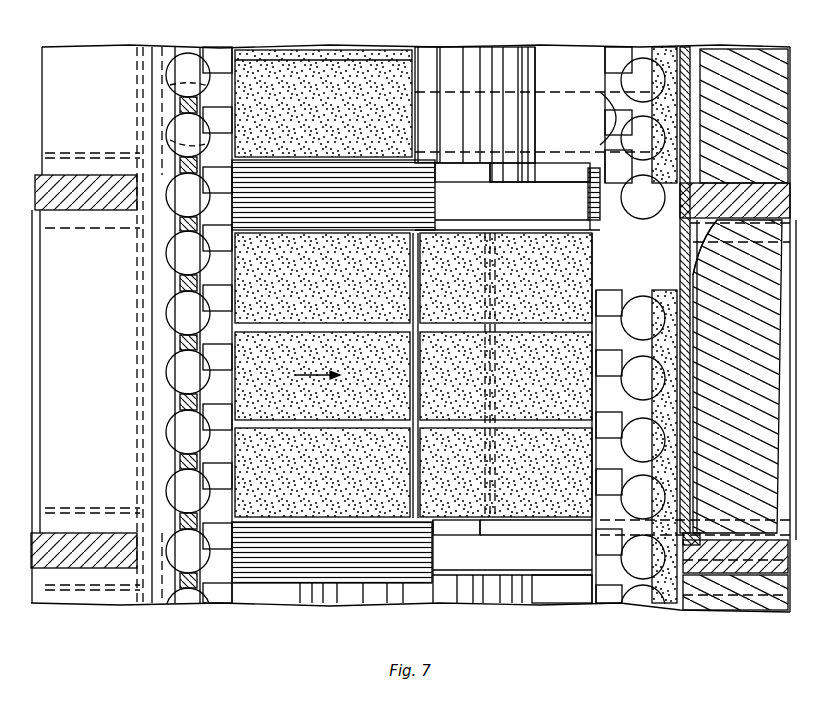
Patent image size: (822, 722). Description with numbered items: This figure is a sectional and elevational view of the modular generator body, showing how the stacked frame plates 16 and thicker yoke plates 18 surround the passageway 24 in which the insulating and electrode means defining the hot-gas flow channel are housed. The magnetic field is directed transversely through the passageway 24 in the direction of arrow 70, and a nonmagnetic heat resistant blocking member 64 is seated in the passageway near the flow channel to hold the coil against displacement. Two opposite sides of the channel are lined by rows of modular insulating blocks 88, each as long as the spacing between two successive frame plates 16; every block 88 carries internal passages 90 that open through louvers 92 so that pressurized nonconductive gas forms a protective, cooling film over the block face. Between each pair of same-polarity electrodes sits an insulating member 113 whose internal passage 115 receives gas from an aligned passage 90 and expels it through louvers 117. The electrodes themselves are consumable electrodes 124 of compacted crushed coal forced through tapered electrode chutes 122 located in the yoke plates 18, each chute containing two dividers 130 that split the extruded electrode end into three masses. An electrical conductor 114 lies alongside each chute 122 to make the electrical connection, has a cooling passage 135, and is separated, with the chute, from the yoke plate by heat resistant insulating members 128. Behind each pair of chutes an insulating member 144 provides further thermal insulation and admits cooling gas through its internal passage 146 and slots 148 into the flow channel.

The frame plate 16 is at (76, 230).
The yoke plate 18 is at (700, 263).
The passageway 24 is at (140, 384).
The blocking member 64 is at (548, 178).
The arrow 70 is at (317, 363).
The insulating block 88 is at (235, 462).
The passage 90 is at (625, 488).
The louver 92 is at (235, 430).
The insulating member 113 is at (280, 234).
The electrical conductor 114 is at (690, 431).
The internal passage 115 is at (422, 180).
The louver 117 is at (262, 565).
The electrode chute 122 is at (698, 272).
The consumable electrode 124 is at (310, 72).
The insulating member 128 is at (700, 337).
The divider 130 is at (545, 332).
The passage 135 is at (696, 463).
The insulating member 144 is at (547, 79).
The internal passage 146 is at (598, 118).
The slot 148 is at (518, 127).